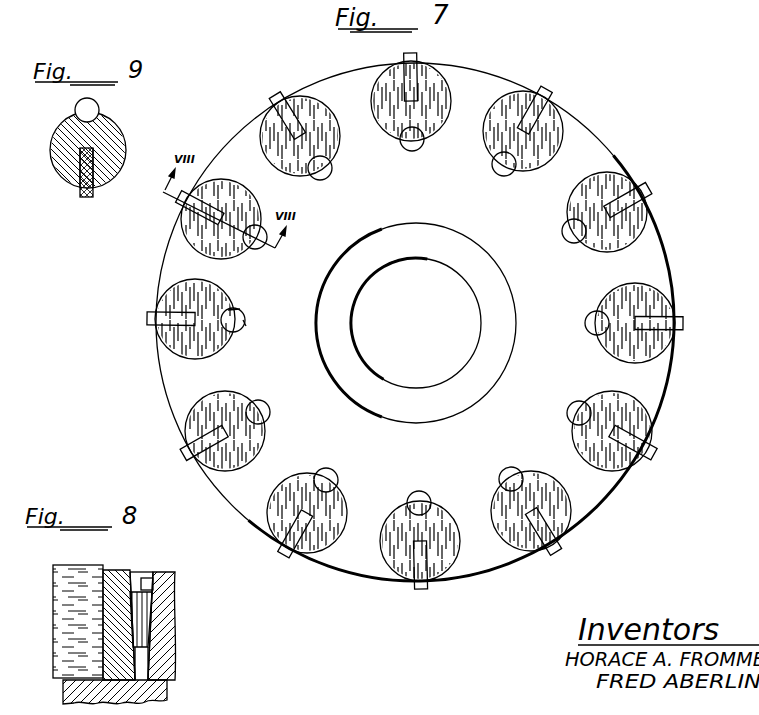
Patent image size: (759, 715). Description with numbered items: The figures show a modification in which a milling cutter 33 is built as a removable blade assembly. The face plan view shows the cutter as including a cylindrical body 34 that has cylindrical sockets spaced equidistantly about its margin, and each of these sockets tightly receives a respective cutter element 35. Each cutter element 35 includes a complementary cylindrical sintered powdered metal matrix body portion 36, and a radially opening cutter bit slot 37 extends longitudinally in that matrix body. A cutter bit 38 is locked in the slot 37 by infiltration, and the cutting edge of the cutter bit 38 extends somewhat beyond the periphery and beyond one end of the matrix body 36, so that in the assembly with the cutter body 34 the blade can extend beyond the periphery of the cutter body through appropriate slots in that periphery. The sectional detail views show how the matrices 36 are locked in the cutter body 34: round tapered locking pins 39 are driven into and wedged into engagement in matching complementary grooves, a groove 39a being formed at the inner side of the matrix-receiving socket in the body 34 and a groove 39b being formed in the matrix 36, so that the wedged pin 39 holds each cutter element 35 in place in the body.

In FIG. 7, the milling cutter 33 is at (594, 119).
In FIG. 8, the cylindrical body 34 is at (160, 663).
In FIG. 7, the cutter elements 35 is at (655, 283).
In FIG. 9, the cutter elements 35 is at (54, 124).
In FIG. 8, the cutter elements 35 is at (126, 569).
In FIG. 7, the cylindrical sintered powdered metal matrix body portion 36 is at (438, 86).
In FIG. 9, the cylindrical sintered powdered metal matrix body portion 36 is at (118, 143).
In FIG. 8, the cylindrical sintered powdered metal matrix body portion 36 is at (123, 666).
In FIG. 9, the cutter bit slot 37 is at (94, 170).
In FIG. 8, the cutter bit slot 37 is at (103, 572).
In FIG. 7, the cutter bit 38 is at (413, 60).
In FIG. 9, the cutter bit 38 is at (87, 198).
In FIG. 8, the cutter bit 38 is at (82, 545).
In FIG. 7, the tapered locking pins 39 is at (242, 315).
In FIG. 9, the tapered locking pins 39 is at (96, 108).
In FIG. 8, the tapered locking pins 39 is at (152, 617).
In FIG. 7, the groove 39a is at (244, 323).
In FIG. 8, the groove 39a is at (153, 582).
In FIG. 7, the groove 39b is at (235, 309).
In FIG. 8, the groove 39b is at (145, 571).